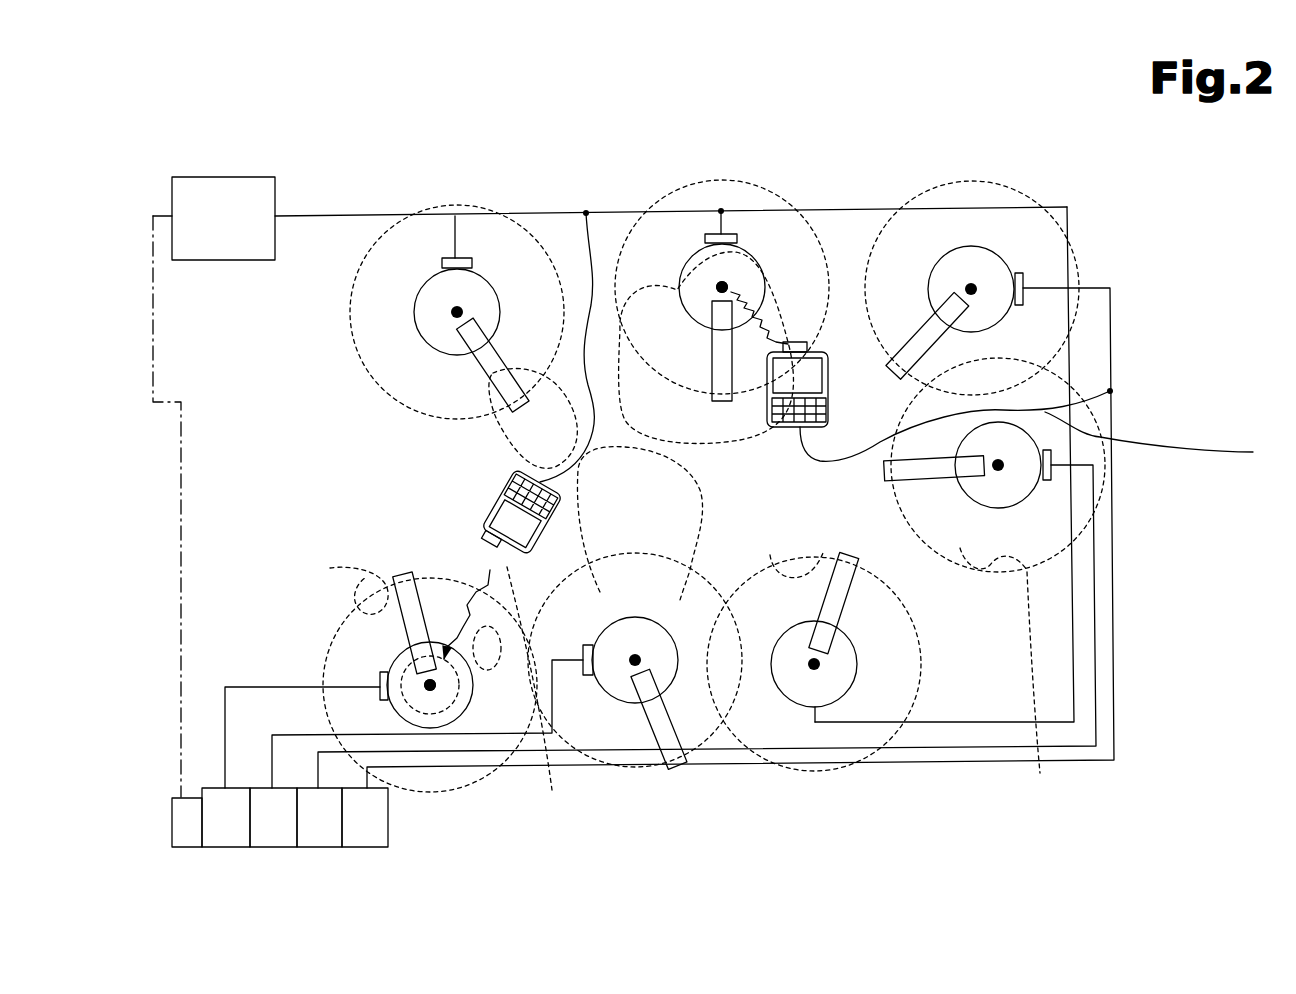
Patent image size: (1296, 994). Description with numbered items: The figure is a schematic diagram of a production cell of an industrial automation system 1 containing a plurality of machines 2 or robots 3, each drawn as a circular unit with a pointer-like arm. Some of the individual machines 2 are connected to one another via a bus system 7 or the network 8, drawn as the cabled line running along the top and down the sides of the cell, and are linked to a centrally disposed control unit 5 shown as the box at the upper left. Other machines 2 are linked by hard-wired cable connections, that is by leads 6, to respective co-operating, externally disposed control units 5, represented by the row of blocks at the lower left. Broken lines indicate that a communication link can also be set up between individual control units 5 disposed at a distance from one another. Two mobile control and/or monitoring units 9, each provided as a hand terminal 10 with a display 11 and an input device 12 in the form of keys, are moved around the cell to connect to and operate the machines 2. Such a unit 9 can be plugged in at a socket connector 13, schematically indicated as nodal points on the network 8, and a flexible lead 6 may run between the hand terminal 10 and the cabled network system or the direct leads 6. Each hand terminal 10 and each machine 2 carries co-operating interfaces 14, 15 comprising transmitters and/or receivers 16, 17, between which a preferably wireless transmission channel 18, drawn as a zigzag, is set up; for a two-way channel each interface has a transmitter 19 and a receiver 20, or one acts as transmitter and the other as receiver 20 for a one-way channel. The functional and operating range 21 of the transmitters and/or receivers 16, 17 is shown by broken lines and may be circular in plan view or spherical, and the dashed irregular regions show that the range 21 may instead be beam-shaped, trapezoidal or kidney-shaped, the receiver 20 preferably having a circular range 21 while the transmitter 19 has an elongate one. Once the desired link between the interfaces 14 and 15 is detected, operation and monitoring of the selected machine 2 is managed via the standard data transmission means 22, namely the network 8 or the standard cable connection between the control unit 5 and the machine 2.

The industrial automation system 1 is at (469, 182).
The machine 2 is at (720, 478).
The robot 3 is at (998, 258).
The control unit 5 is at (233, 145).
The lead 6 is at (588, 292).
The bus system 7 is at (824, 205).
The network 8 is at (865, 172).
The control and/or monitoring unit 9 is at (500, 467).
The hand terminal 10 is at (500, 477).
The display 11 is at (498, 526).
The input device 12 is at (460, 484).
The socket connector 13 is at (590, 192).
The interface 14 is at (818, 327).
The interface 15 is at (738, 266).
The transmitter and/or receiver 16 is at (804, 317).
The transmitter and/or receiver 17 is at (521, 394).
The transmission channel 18 is at (795, 330).
The transmitter 19 is at (822, 668).
The receiver 20 is at (1000, 468).
The functional and operating range 21 is at (732, 172).
The data transmission means 22 is at (533, 190).